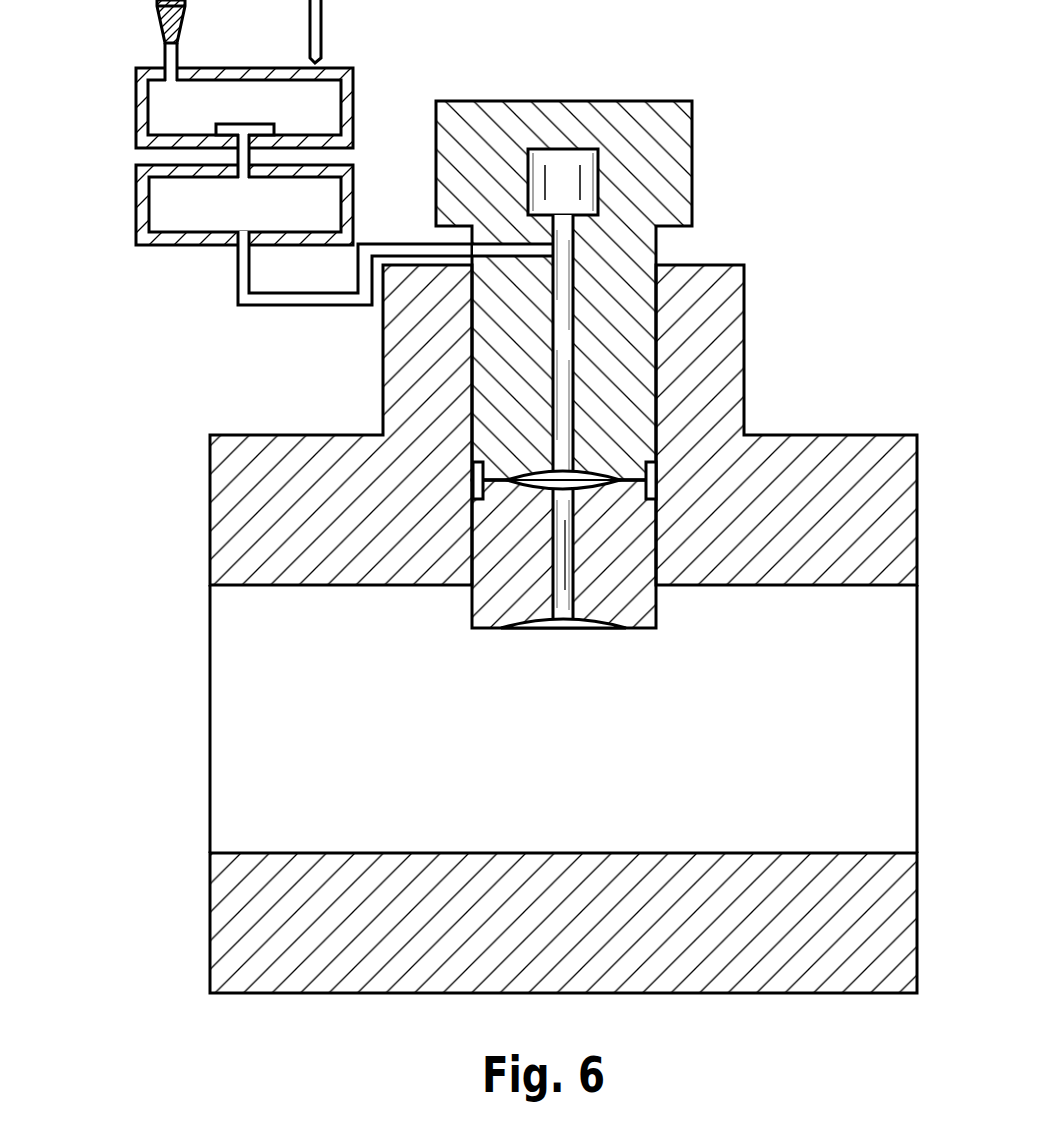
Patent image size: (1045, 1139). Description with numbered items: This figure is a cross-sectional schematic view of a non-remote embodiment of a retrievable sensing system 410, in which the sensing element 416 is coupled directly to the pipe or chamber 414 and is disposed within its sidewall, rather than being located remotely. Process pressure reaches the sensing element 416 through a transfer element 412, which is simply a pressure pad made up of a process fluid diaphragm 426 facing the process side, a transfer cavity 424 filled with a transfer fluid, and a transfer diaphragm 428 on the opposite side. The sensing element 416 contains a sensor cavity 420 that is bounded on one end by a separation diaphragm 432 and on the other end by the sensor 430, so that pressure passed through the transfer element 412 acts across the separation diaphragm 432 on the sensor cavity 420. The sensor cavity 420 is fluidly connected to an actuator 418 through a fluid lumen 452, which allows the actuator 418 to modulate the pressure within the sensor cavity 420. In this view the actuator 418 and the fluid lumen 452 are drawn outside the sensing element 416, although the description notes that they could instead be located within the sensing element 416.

The retrievable sensing system 410 is at (490, 496).
The transfer element 412 is at (610, 560).
The pipe or chamber 414 is at (282, 477).
The sensing element 416 is at (697, 208).
The actuator 418 is at (120, 158).
The sensor cavity 420 is at (562, 352).
The transfer cavity 424 is at (560, 557).
The process fluid diaphragm 426 is at (545, 630).
The transfer diaphragm 428 is at (563, 486).
The sensor 430 is at (565, 173).
The separation diaphragm 432 is at (582, 477).
The fluid lumen 452 is at (393, 243).